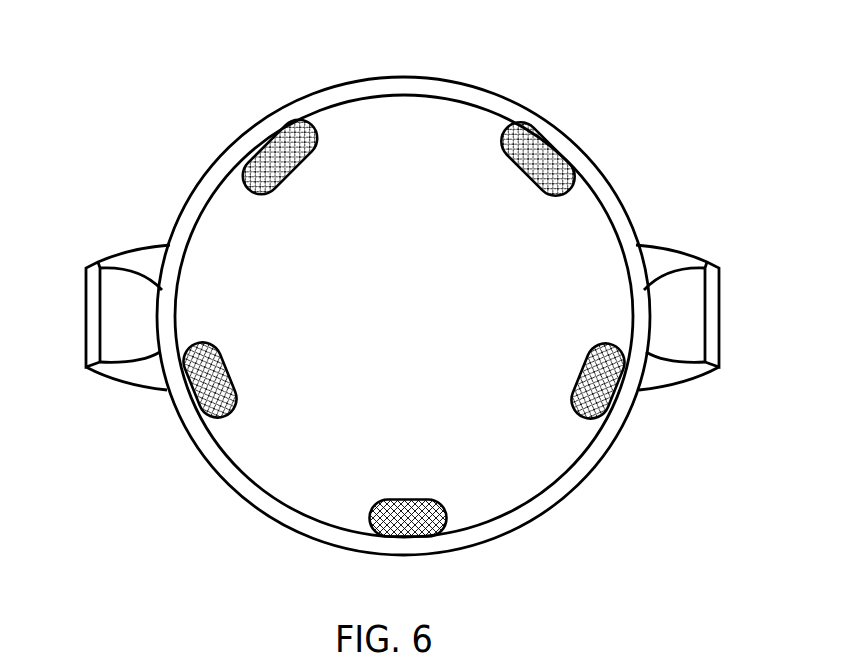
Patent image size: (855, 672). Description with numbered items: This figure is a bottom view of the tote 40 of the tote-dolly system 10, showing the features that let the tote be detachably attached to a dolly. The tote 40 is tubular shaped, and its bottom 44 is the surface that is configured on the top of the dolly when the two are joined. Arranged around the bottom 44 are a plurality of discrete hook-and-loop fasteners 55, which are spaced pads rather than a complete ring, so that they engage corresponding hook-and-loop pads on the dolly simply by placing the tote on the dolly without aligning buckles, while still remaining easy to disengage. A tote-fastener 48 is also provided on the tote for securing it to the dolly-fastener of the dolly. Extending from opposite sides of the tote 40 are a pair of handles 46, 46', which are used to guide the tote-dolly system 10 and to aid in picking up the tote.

The tote-dolly system 10 is at (226, 112).
The tote 40 is at (222, 177).
The bottom of the tote 44 is at (340, 153).
The handle 46 is at (101, 284).
The handle 46' is at (714, 284).
The tote-fastener 48 is at (564, 147).
The discrete hook-and-loop fastener 55 is at (543, 132).